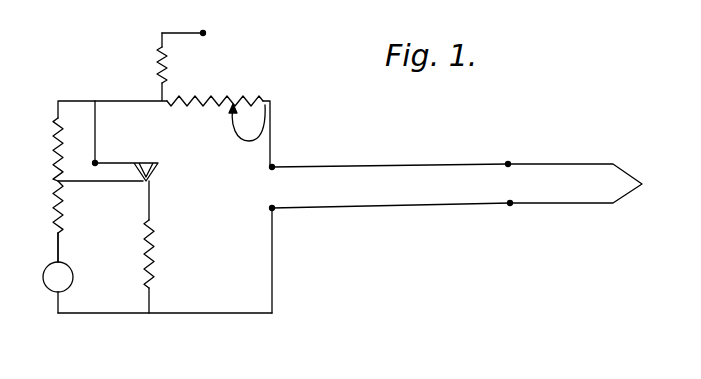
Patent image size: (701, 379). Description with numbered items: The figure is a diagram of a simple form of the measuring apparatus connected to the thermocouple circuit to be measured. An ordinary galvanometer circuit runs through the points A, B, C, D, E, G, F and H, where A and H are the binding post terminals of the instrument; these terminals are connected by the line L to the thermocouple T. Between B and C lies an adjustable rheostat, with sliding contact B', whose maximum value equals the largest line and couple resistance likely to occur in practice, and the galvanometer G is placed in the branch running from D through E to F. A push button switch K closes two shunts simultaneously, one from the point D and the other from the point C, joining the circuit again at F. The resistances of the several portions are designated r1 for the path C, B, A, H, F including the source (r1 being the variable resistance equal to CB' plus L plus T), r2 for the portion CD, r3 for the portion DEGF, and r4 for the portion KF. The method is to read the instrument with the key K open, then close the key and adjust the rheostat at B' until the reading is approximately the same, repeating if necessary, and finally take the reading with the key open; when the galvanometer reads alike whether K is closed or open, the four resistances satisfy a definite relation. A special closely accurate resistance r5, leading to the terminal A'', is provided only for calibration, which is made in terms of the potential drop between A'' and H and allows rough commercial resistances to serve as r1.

The terminal A'' is at (194, 21).
The special accurate resistance r5 is at (173, 65).
The junction point C is at (93, 121).
The variable resistance r1 is at (215, 114).
The sliding contact of rheostat B' is at (247, 106).
The end of rheostat B is at (275, 121).
The resistance CD r2 is at (43, 149).
The resistance DEGF r3 is at (70, 208).
The junction point D is at (84, 191).
The push button switch K is at (126, 160).
The circuit point E is at (39, 246).
The galvanometer G is at (58, 277).
The resistance KF r4 is at (159, 254).
The junction point F is at (165, 325).
The binding post terminal A is at (260, 166).
The binding post terminal H is at (260, 255).
The line L is at (391, 186).
The thermocouple T is at (574, 184).